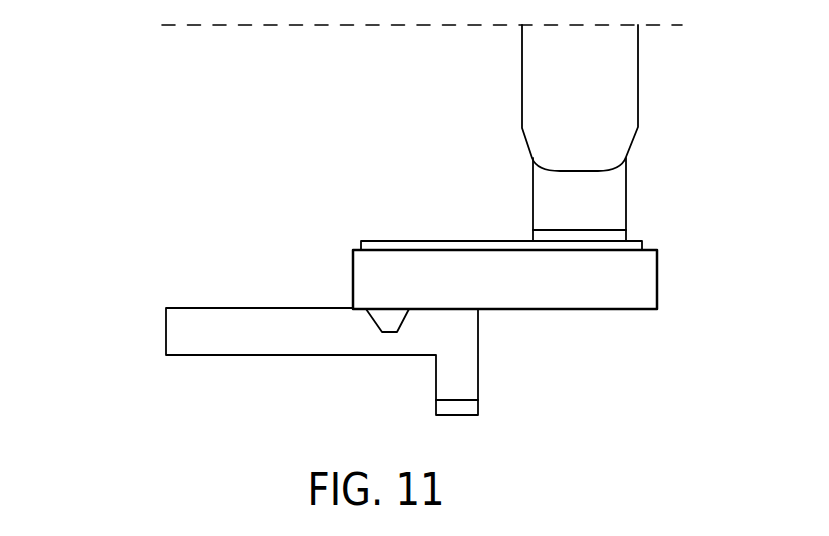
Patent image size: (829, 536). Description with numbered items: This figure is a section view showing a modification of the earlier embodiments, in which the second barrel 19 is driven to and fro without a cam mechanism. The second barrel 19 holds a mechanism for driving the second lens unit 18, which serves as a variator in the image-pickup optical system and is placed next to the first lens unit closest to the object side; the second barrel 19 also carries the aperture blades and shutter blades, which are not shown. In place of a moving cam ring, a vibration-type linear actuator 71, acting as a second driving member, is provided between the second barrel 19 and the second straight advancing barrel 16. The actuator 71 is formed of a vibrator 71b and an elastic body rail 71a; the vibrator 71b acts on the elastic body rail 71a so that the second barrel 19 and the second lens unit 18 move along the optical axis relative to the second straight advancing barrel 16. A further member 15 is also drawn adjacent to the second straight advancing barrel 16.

The holder arm 15 is at (192, 343).
The second straight advancing barrel 16 is at (583, 310).
The second lens unit 18 is at (607, 108).
The second barrel 19 is at (610, 210).
The vibration-type linear actuator 71 is at (493, 170).
The elastic body rail 71a is at (403, 241).
The vibrator 71b is at (535, 195).